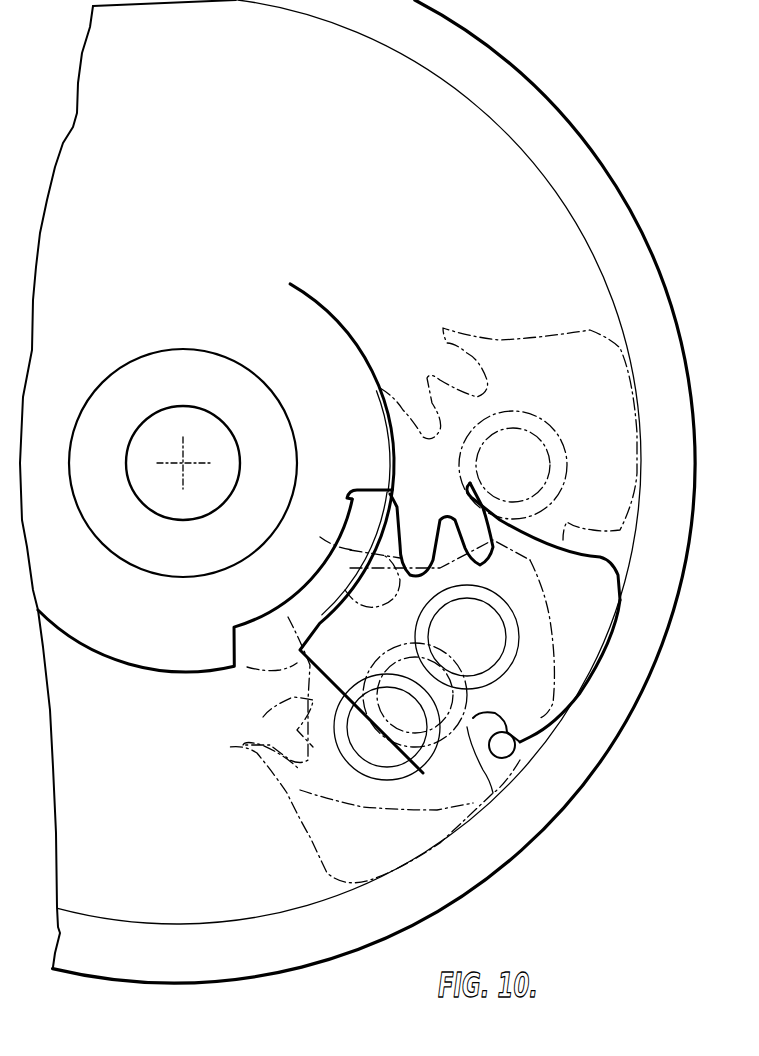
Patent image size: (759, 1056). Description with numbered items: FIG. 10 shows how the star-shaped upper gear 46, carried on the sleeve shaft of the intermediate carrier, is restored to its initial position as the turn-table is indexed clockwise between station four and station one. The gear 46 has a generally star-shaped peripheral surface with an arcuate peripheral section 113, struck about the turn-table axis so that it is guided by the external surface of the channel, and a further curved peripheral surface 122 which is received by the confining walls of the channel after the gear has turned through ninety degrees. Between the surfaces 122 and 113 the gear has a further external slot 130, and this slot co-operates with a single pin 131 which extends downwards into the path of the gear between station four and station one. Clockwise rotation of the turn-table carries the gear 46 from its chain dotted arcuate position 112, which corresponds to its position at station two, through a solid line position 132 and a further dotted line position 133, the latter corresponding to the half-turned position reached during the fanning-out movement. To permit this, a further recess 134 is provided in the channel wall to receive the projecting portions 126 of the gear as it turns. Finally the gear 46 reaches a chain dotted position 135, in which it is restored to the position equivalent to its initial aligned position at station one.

The upper gear 46 is at (606, 596).
The chain dotted position 112 is at (604, 348).
The peripheral section 113 is at (441, 695).
The curved peripheral surface 122 is at (608, 623).
The projecting portions 126 is at (350, 562).
The external slot 130 is at (500, 717).
The single pin 131 is at (510, 749).
The solid line position 132 is at (586, 585).
The dotted line position 133 is at (378, 786).
The further recess 134 is at (347, 502).
The chain dotted position 135 is at (297, 782).